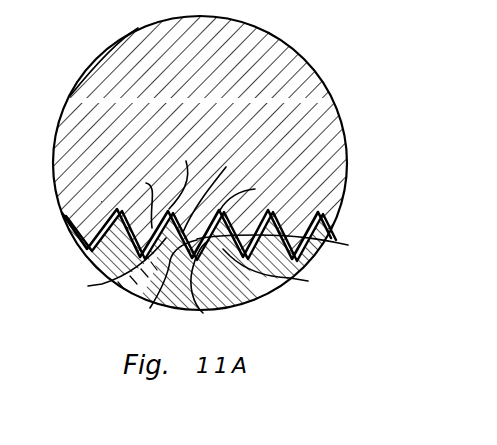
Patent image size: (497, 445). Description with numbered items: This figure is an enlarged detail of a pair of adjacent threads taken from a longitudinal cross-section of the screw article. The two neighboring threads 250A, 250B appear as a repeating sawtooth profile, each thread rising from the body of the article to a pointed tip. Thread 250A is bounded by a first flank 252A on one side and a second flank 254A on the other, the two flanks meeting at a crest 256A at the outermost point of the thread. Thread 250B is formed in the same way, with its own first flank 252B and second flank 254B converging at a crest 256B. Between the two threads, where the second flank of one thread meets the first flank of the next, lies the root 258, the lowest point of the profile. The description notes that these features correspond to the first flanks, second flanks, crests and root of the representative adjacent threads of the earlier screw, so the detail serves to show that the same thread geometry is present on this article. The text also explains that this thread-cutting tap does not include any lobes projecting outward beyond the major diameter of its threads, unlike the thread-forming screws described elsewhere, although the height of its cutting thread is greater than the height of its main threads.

The thread 250A is at (180, 254).
The thread 250B is at (215, 254).
The first flank 252A is at (114, 200).
The first flank 252B is at (150, 308).
The second flank 254A is at (233, 188).
The second flank 254B is at (300, 242).
The crest 256A is at (156, 175).
The crest 256B is at (266, 190).
The root 258 is at (203, 313).